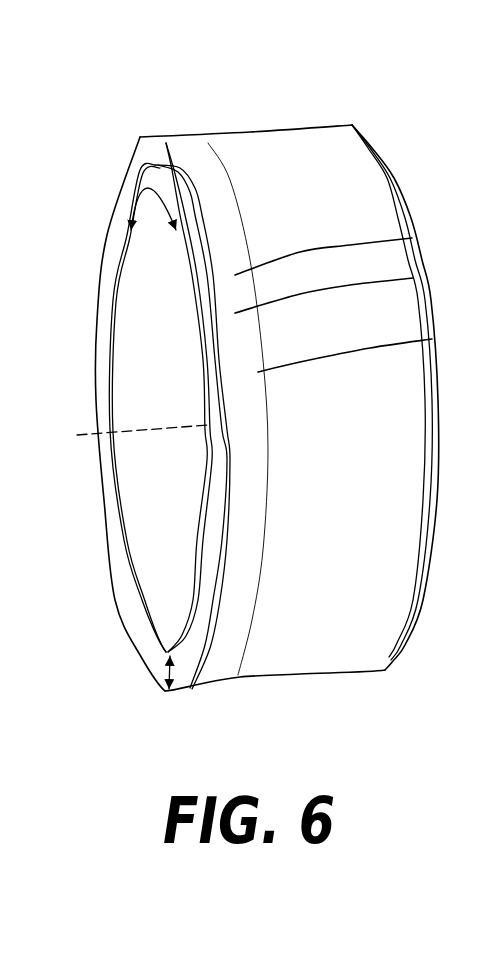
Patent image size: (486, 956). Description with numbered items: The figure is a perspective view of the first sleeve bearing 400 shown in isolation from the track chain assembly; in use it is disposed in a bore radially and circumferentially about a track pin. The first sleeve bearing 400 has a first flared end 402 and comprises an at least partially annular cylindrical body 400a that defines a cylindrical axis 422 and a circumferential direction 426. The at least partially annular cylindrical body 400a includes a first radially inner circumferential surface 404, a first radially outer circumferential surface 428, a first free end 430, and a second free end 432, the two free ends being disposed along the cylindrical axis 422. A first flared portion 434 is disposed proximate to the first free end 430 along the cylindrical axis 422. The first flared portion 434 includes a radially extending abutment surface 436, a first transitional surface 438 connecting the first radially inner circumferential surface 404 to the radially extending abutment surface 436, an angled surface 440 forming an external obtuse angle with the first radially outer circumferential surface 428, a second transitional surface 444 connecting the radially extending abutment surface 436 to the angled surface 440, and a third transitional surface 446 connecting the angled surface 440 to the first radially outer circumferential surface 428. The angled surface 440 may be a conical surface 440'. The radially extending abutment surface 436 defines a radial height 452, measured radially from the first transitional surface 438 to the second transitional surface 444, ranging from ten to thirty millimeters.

The first sleeve bearing 400 is at (276, 84).
The at least partially annular cylindrical body 400a is at (355, 116).
The first flared end 402 is at (250, 595).
The first radially inner circumferential surface 404 is at (135, 318).
The cylindrical axis 422 is at (133, 428).
The circumferential direction 426 is at (140, 180).
The first radially outer circumferential surface 428 is at (349, 507).
The first free end 430 is at (140, 137).
The second free end 432 is at (407, 210).
The first flared portion 434 is at (195, 115).
The radially extending abutment surface 436 is at (217, 483).
The first transitional surface 438 is at (128, 592).
The angled surface 440 is at (356, 271).
The conical surface 440' is at (352, 232).
The second transitional surface 444 is at (165, 140).
The third transitional surface 446 is at (432, 339).
The radial height 452 is at (182, 677).